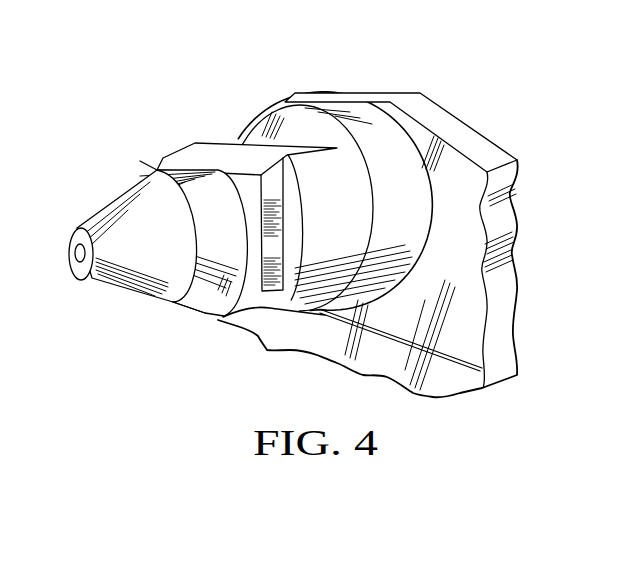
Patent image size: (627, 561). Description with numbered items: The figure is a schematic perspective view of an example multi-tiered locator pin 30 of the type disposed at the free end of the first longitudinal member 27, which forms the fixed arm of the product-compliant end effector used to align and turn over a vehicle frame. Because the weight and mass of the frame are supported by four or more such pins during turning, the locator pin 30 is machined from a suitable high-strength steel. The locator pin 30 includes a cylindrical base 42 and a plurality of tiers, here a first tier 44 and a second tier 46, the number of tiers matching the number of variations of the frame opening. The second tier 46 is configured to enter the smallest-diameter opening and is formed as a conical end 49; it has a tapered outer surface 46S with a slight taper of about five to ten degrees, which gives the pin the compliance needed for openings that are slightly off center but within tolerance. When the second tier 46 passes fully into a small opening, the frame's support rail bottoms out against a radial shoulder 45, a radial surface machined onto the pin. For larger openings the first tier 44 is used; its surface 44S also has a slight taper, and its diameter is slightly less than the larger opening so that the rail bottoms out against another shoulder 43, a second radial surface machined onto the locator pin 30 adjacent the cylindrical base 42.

The locator pin 30 is at (306, 215).
The first longitudinal member 27 is at (453, 235).
The cylindrical base 42 is at (326, 188).
The first tier 44 is at (202, 127).
The surface 44S is at (347, 222).
The second tier 46 is at (155, 241).
The tapered outer surface 46S is at (236, 234).
The radial shoulder 45 is at (204, 313).
The conical end 49 is at (130, 295).
The shoulder 43 is at (302, 306).